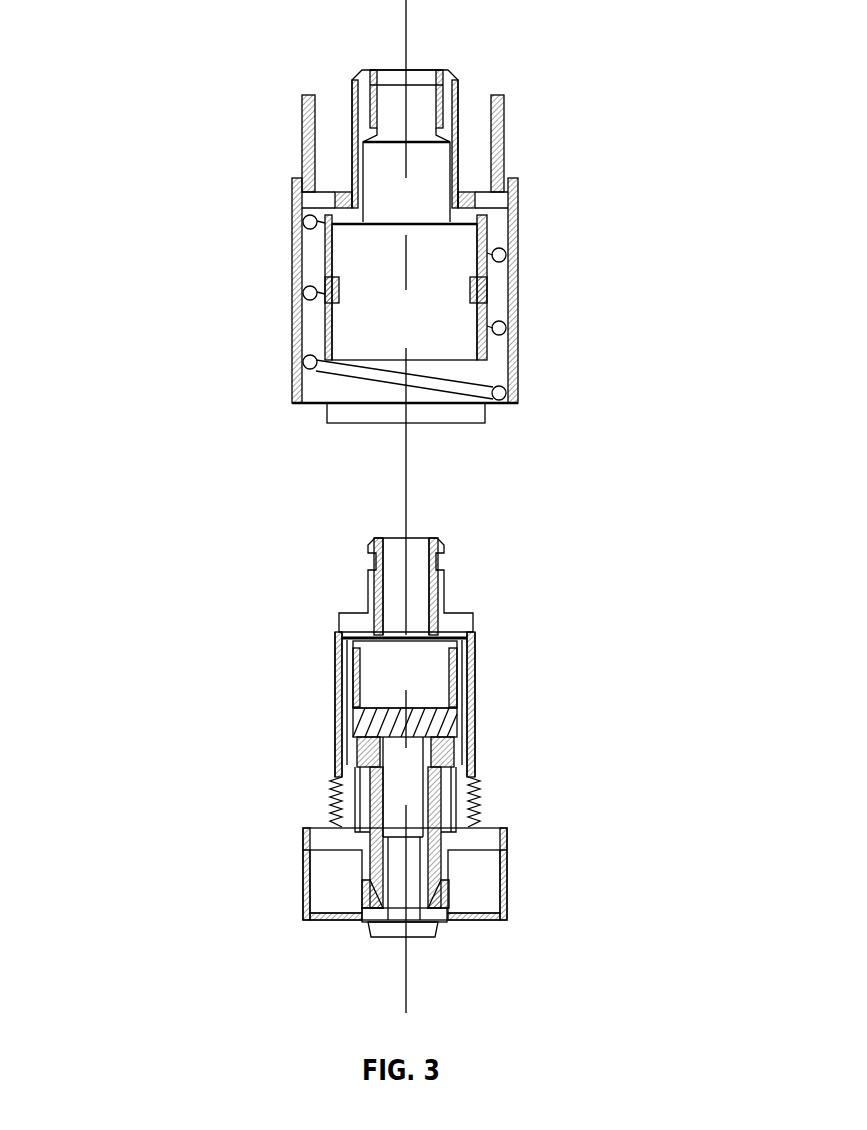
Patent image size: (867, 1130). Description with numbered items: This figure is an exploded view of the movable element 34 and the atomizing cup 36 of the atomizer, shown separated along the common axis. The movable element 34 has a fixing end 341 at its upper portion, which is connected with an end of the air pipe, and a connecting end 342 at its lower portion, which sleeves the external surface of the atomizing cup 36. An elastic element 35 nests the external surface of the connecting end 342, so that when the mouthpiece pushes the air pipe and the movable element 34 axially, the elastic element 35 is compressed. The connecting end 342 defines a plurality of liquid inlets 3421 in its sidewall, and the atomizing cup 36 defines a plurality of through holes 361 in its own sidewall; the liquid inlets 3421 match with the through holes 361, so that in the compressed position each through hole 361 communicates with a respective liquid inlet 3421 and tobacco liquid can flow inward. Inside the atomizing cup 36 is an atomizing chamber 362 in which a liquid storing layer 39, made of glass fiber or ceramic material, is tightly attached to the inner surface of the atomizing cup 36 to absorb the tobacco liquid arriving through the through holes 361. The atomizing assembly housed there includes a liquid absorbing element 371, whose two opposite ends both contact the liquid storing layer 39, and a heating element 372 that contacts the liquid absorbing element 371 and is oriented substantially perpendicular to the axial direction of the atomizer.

The movable element 34 is at (328, 254).
The fixing end 341 is at (447, 107).
The connecting end 342 is at (322, 328).
The liquid inlets 3421 is at (483, 290).
The elastic element 35 is at (492, 332).
The atomizing cup 36 is at (475, 720).
The through holes 361 is at (474, 683).
The atomizing chamber 362 is at (390, 672).
The liquid absorbing element 371 is at (338, 728).
The heating element 372 is at (417, 703).
The liquid storing layer 39 is at (338, 664).